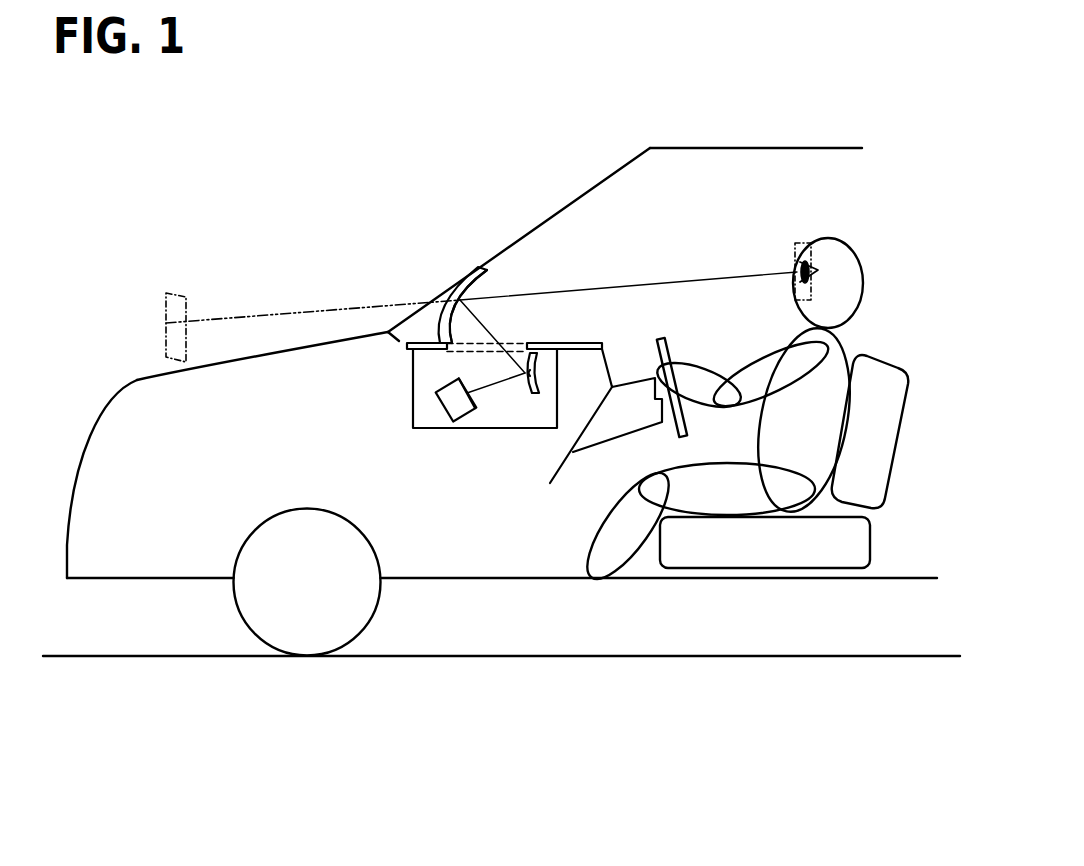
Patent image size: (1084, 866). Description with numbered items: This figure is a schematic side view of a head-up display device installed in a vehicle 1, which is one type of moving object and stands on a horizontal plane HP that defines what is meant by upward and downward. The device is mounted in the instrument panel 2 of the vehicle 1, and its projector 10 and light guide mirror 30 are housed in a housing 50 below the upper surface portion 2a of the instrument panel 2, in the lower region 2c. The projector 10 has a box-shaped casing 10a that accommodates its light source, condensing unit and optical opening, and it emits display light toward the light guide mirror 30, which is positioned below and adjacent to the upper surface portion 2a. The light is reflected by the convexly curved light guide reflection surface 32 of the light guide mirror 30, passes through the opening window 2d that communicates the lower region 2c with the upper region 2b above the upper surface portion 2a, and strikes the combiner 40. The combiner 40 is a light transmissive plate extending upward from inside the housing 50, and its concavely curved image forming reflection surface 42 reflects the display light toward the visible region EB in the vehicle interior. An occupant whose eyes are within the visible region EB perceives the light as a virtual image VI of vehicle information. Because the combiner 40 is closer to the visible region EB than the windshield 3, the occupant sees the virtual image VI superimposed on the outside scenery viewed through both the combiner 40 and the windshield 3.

The vehicle 1 is at (832, 147).
The windshield 3 is at (562, 190).
The instrument panel 2 is at (513, 389).
The upper surface portion 2a is at (580, 343).
The upper region 2b is at (543, 287).
The lower region 2c is at (433, 363).
The opening window 2d is at (519, 343).
The housing 50 is at (412, 410).
The projector 10 is at (457, 430).
The casing 10a is at (467, 394).
The light guide mirror 30 is at (537, 395).
The light guide reflection surface 32 is at (520, 387).
The combiner 40 is at (463, 277).
The image forming reflection surface 42 is at (488, 292).
The virtual image VI is at (186, 308).
The visible region EB is at (815, 248).
The horizontal plane HP is at (922, 655).